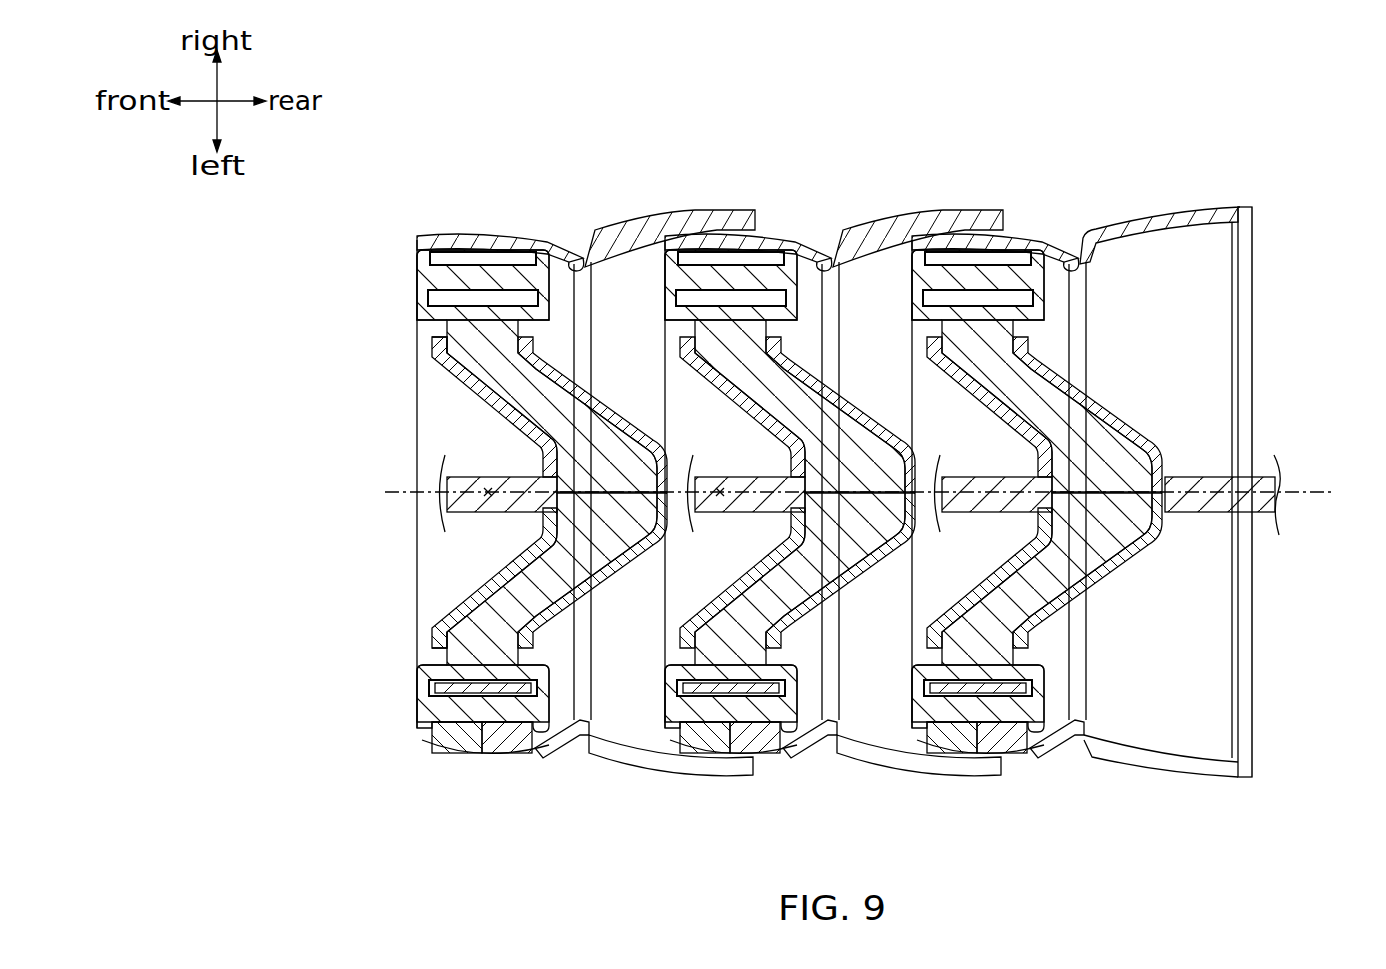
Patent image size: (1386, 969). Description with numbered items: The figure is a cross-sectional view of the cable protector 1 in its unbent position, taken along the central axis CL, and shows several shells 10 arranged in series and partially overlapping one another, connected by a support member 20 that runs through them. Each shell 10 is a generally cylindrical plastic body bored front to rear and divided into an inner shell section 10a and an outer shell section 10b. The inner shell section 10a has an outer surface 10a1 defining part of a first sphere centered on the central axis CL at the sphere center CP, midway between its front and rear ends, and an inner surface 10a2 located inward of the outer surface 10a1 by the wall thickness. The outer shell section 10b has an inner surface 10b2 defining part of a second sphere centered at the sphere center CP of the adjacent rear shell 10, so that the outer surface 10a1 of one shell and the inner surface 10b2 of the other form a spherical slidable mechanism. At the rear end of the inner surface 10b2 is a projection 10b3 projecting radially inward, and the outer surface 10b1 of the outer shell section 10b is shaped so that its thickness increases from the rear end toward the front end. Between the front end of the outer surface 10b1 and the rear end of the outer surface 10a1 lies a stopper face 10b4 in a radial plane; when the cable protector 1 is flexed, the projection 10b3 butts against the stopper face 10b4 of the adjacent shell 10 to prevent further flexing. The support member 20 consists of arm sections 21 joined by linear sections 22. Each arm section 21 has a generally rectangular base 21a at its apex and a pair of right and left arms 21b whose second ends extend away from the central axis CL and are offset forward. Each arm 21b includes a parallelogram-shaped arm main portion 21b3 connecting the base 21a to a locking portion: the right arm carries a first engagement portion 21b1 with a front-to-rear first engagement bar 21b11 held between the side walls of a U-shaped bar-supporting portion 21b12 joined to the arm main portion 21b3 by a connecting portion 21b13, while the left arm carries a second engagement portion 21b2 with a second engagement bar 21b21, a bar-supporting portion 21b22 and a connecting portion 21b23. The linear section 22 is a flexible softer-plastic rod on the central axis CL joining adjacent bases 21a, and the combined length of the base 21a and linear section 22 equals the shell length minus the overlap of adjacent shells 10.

The cable protector 1 is at (1059, 155).
The shell 10 is at (1153, 213).
The inner shell section 10a is at (492, 234).
The outer surface 10a1 is at (445, 243).
The inner surface 10a2 is at (549, 209).
The outer shell section 10b is at (672, 213).
The outer surface 10b1 is at (653, 188).
The inner surface 10b2 is at (671, 513).
The projection 10b3 is at (879, 205).
The stopper face 10b4 is at (653, 188).
The support member 20 is at (1130, 408).
The arm section 21 is at (262, 412).
The base 21a is at (578, 514).
The arm 21b is at (520, 418).
The first engagement portion 21b1 is at (442, 274).
The first engagement bar 21b11 is at (436, 256).
The bar-supporting portion 21b12 is at (432, 298).
The connecting portion 21b13 is at (432, 340).
The second engagement portion 21b2 is at (426, 686).
The second engagement bar 21b21 is at (467, 712).
The bar-supporting portion 21b22 is at (434, 698).
The connecting portion 21b23 is at (432, 645).
The arm main portion 21b3 is at (520, 386).
The linear section 22 is at (492, 472).
The sphere center CP is at (484, 492).
The central axis CL is at (880, 493).